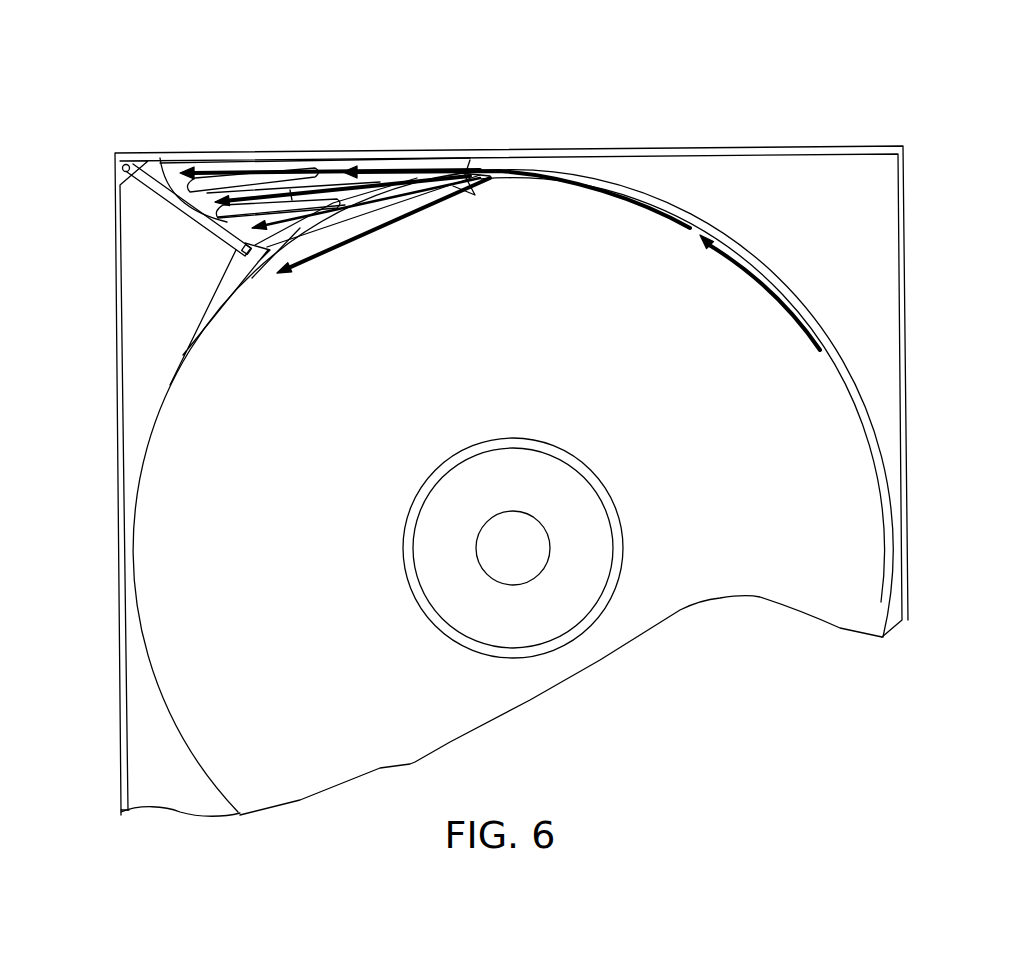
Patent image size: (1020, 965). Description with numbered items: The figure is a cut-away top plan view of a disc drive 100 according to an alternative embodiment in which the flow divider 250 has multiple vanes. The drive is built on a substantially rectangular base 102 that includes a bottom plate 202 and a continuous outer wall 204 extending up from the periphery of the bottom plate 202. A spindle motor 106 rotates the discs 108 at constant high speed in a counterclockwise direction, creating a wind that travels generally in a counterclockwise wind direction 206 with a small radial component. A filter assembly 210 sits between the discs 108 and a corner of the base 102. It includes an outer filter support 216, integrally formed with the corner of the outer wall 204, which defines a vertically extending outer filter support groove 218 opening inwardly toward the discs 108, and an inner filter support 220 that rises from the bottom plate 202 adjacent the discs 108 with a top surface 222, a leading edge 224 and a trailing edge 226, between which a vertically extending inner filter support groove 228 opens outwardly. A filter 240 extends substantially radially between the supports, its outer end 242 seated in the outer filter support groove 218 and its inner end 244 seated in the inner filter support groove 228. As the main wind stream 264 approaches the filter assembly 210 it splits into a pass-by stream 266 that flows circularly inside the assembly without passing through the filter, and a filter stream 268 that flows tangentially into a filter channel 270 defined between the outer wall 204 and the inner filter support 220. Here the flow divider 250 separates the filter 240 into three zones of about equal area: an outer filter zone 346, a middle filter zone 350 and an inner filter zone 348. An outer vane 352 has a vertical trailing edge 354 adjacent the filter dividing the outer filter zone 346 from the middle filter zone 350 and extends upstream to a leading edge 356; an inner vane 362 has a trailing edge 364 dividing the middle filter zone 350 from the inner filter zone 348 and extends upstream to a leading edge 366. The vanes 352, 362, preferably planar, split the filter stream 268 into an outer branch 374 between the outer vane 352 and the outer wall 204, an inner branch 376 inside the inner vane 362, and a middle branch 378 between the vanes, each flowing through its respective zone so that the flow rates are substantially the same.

The disc drive 100 is at (683, 768).
The base 102 is at (214, 853).
The spindle motor 106 is at (592, 518).
The discs 108 is at (745, 566).
The bottom plate 202 is at (190, 795).
The outer wall 204 is at (122, 812).
The wind direction 206 is at (767, 290).
The filter assembly 210 is at (178, 80).
The outer filter support 216 is at (131, 128).
The outer filter support groove 218 is at (125, 165).
The inner filter support 220 is at (175, 335).
The top surface 222 is at (236, 270).
The leading edge 224 is at (270, 256).
The trailing edge 226 is at (203, 327).
The inner filter support groove 228 is at (242, 256).
The filter 240 is at (139, 261).
The outer end 242 is at (122, 171).
The inner end 244 is at (170, 342).
The flow divider 250 is at (378, 100).
The main wind stream 264 is at (605, 195).
The pass-by stream 266 is at (295, 268).
The filter stream 268 is at (466, 178).
The filter channel 270 is at (375, 160).
The outer filter zone 346 is at (145, 178).
The inner filter zone 348 is at (228, 246).
The middle filter zone 350 is at (190, 213).
The outer vane 352 is at (245, 178).
The trailing edge 354 is at (160, 160).
The leading edge 356 is at (325, 200).
The inner vane 362 is at (300, 262).
The trailing edge 364 is at (207, 165).
The leading edge 366 is at (360, 200).
The outer branch 374 is at (292, 195).
The inner branch 376 is at (370, 215).
The middle branch 378 is at (465, 160).